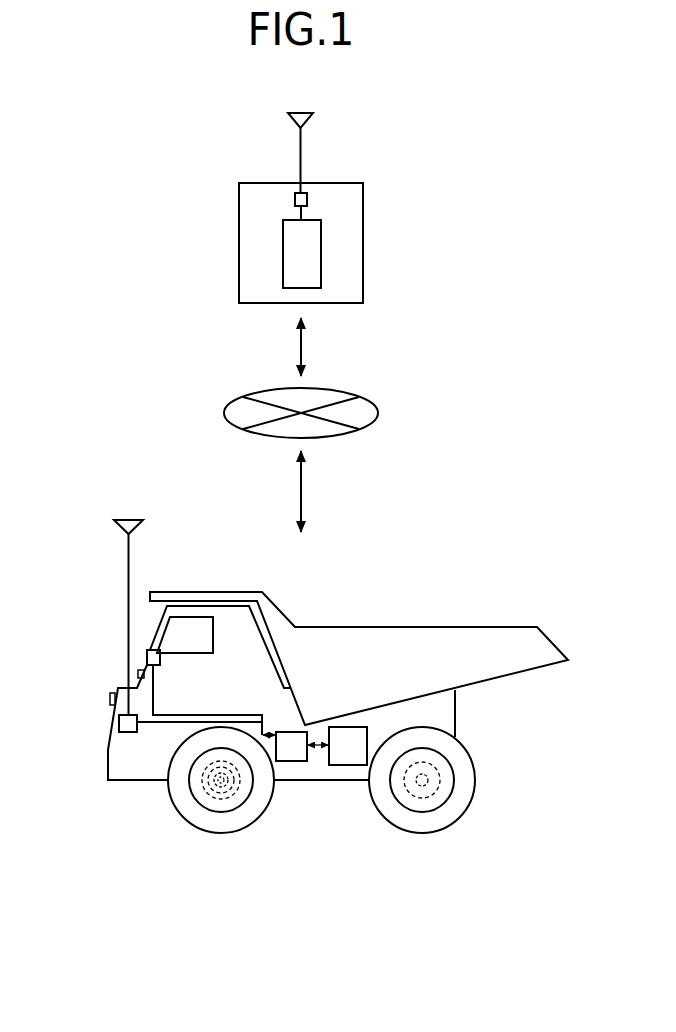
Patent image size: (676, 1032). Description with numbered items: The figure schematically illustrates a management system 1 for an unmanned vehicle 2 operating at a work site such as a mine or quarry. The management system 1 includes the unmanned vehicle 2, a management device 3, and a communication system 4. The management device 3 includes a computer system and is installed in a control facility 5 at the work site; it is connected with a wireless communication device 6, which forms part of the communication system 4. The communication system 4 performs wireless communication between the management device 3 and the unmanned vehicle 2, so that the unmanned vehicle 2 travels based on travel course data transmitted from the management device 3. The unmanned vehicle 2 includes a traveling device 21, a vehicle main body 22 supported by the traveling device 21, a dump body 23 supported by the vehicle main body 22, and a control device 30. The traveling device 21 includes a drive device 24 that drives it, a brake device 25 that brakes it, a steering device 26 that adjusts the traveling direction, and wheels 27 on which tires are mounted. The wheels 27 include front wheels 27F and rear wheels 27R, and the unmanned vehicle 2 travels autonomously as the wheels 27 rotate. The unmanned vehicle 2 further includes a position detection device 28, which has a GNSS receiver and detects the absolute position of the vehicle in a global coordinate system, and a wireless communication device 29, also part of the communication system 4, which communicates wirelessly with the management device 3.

The management system 1 is at (457, 131).
The unmanned vehicle 2 is at (418, 589).
The management device 3 is at (283, 251).
The communication system 4 is at (361, 396).
The control facility 5 is at (261, 180).
The wireless communication device 6 is at (295, 198).
The traveling device 21 is at (166, 800).
The vehicle main body 22 is at (462, 721).
The dump body 23 is at (341, 626).
The drive device 24 is at (343, 766).
The brake device 25 is at (203, 810).
The steering device 26 is at (242, 800).
The wheels 27 is at (326, 804).
The front wheels 27F is at (222, 813).
The rear wheels 27R is at (423, 813).
The position detection device 28 is at (147, 651).
The wireless communication device 29 is at (119, 724).
The control device 30 is at (291, 762).